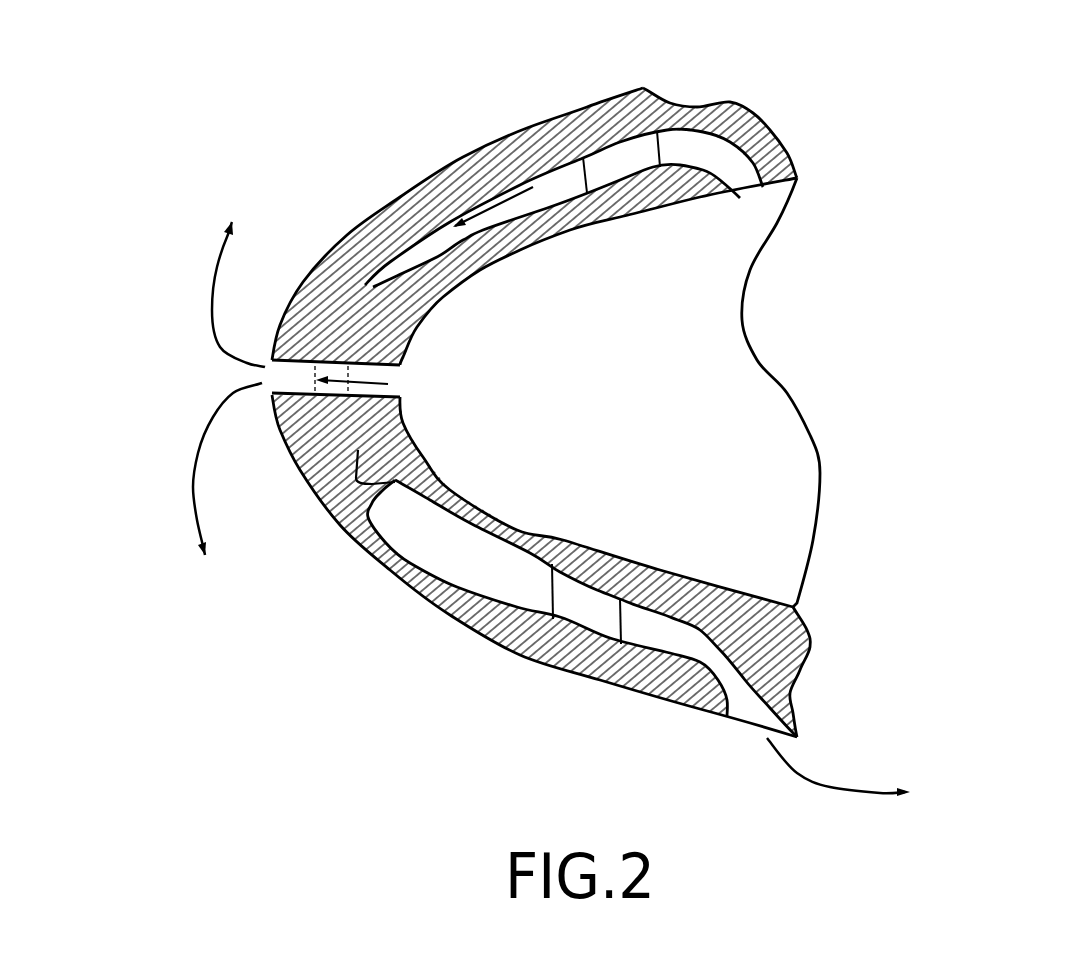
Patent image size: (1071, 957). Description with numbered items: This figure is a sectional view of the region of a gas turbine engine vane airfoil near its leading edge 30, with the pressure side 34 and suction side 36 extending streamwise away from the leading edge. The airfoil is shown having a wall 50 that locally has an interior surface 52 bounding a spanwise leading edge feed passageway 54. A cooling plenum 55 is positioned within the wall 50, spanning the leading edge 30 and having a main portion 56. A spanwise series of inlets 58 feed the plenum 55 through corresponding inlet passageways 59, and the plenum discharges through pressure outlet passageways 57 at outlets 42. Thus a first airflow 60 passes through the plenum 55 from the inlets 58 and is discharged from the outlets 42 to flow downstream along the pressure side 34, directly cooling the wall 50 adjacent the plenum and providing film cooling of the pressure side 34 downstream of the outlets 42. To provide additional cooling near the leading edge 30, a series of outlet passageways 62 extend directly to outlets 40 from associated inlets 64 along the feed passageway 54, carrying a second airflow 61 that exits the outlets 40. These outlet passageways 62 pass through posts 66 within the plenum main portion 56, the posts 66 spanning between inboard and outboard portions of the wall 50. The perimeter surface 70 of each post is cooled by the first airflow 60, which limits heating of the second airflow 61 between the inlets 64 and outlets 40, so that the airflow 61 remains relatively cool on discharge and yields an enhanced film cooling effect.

The leading edge 30 is at (267, 372).
The pressure side 34 is at (570, 670).
The suction side 36 is at (520, 127).
The outlets 40 is at (210, 360).
The outlets 42 is at (745, 740).
The wall 50 is at (457, 173).
The interior surface 52 is at (590, 235).
The leading edge feed passageway 54 is at (690, 380).
The cooling plenum 55 is at (507, 573).
The main portion 56 is at (453, 543).
The pressure outlet passageways 57 is at (680, 643).
The inlets 58 is at (749, 201).
The inlet passageways 59 is at (717, 157).
The first airflow 60 is at (498, 203).
The second airflow 61 is at (347, 365).
The outlet passageways 62 is at (337, 400).
The inlets 64 is at (410, 380).
The posts 66 is at (358, 450).
The perimeter surface 70 is at (445, 493).